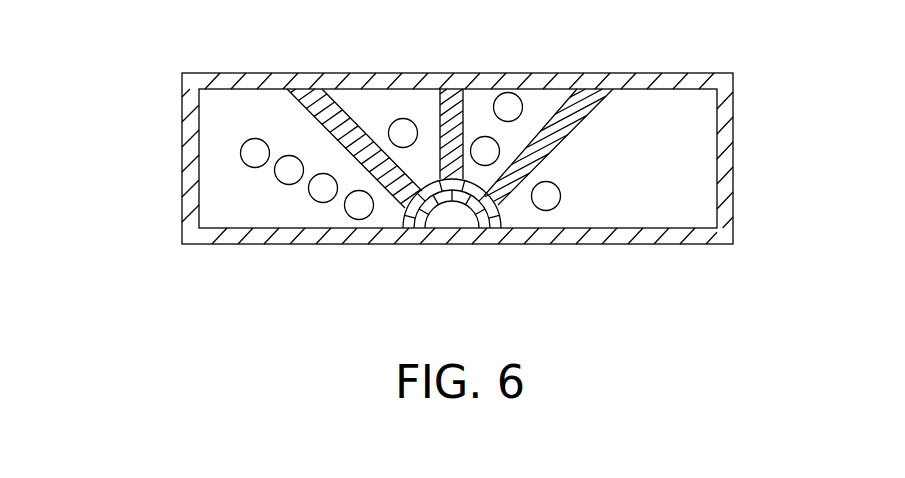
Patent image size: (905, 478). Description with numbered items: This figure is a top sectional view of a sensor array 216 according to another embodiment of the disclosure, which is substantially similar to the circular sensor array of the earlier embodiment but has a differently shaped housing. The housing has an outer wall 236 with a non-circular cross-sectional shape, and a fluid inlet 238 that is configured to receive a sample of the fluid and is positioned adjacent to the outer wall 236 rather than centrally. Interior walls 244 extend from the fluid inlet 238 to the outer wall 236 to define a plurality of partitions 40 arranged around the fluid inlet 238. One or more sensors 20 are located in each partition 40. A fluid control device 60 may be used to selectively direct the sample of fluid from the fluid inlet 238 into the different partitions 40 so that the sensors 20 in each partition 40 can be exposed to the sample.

The sensor array 216 is at (167, 50).
The outer wall 236 is at (182, 128).
The partitions 40 is at (214, 193).
The sensors 20 is at (358, 220).
The interior walls 244 is at (305, 113).
The fluid inlet 238 is at (452, 216).
The fluid control device 60 is at (481, 232).